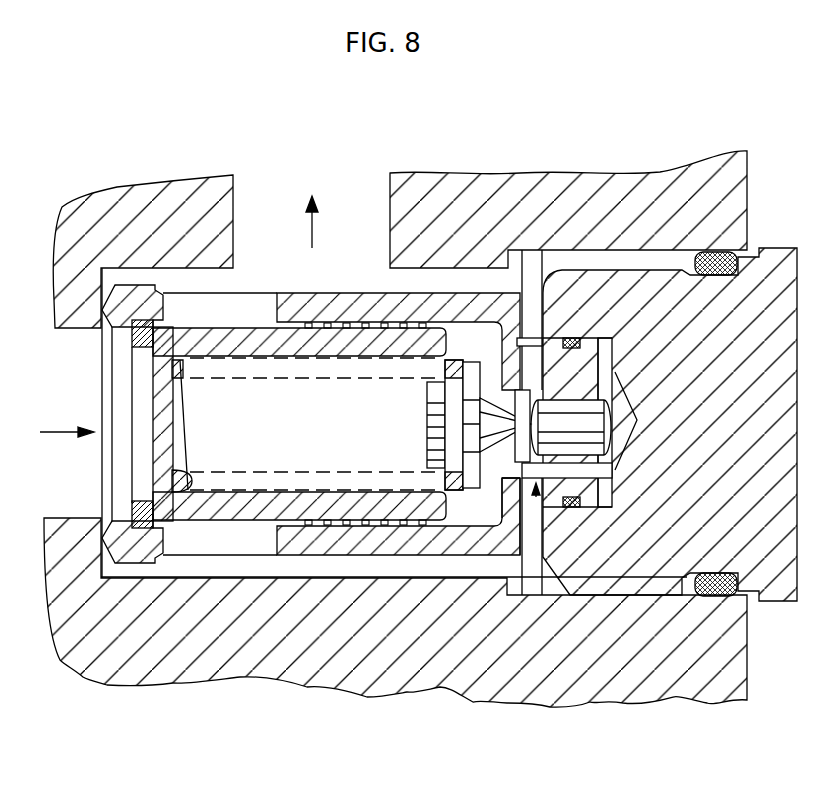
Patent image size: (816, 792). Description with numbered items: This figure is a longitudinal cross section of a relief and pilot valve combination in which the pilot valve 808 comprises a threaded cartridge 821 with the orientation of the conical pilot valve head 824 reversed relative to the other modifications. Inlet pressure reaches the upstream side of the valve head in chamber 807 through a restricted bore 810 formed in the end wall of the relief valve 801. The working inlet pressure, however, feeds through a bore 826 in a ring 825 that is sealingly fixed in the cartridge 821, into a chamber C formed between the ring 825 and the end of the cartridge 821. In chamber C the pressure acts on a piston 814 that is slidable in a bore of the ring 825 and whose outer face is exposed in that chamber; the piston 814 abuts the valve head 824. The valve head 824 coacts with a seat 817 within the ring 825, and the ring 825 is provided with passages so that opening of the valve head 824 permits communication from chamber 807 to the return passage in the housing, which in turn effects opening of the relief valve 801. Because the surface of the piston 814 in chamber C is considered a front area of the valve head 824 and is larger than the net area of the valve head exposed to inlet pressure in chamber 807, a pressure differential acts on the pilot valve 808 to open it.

The relief valve 801 is at (287, 507).
The chamber 807 is at (306, 413).
The pilot valve 808 is at (537, 497).
The restricted bore 810 is at (157, 425).
The piston 814 is at (585, 420).
The seat 817 is at (494, 393).
The threaded cartridge 821 is at (642, 543).
The conical pilot valve head 824 is at (492, 414).
The ring 825 is at (513, 491).
The bore 826 is at (585, 472).
The chamber C is at (637, 420).